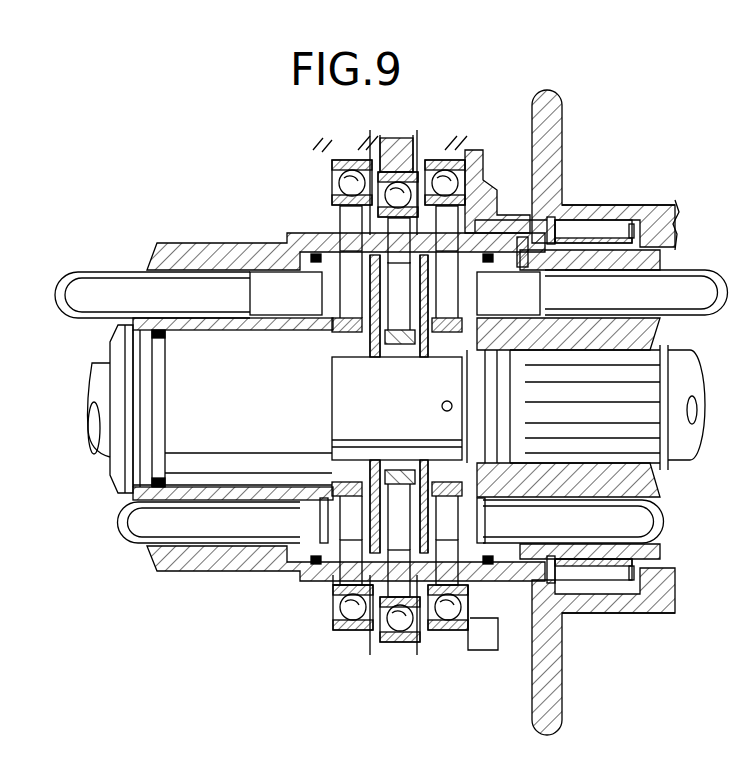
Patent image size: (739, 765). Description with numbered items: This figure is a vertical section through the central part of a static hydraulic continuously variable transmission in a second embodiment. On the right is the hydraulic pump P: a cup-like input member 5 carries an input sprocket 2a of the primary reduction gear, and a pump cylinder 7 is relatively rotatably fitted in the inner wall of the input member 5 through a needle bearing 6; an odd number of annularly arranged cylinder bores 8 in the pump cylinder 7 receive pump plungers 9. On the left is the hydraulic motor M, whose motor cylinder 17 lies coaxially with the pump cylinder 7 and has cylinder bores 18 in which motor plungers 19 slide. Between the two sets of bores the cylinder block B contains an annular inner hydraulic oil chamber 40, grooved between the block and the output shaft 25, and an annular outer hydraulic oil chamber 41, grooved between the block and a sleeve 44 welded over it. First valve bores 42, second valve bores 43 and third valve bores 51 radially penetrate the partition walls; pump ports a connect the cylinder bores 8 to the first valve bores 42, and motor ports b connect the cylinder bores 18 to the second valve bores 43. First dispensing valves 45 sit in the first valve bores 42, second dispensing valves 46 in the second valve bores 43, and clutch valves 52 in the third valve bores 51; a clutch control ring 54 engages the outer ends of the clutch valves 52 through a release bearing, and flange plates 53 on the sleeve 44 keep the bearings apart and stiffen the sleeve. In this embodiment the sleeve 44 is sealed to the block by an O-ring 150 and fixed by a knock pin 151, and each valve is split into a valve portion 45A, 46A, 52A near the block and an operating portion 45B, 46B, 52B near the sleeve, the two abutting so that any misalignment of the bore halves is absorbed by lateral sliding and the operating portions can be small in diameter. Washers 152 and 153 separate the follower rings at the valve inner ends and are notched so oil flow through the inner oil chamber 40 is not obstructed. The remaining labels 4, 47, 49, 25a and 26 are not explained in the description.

The hydraulic motor M is at (190, 198).
The cylinder block B is at (185, 248).
The hydraulic pump P is at (684, 208).
The motor cylinder 17 is at (218, 262).
The motor plungers 19 is at (177, 407).
The cylinder bores 18 is at (286, 293).
The motor ports b is at (332, 290).
The pump ports a is at (468, 290).
The cylinder bores 8 is at (508, 293).
The pump plungers 9 is at (605, 406).
The input sprocket 2a is at (548, 104).
The input member 5 is at (626, 212).
The pump cylinder 7 is at (610, 266).
The needle bearing 6 is at (608, 583).
The knock pin 151 is at (530, 262).
The second dispensing valves 46 is at (248, 208).
The valve portion 46A is at (350, 253).
The operating portion 46B is at (340, 212).
The shaft 4 is at (350, 142).
The first dispensing valves 45 is at (430, 105).
The valve portion 45A is at (480, 188).
The operating portion 45B is at (452, 190).
The sleeve 44 is at (500, 230).
The third valve bores 51 is at (360, 632).
The clutch control ring 54 is at (415, 385).
The flange plates 53 is at (383, 640).
The plate 47 is at (452, 392).
The inner hydraulic oil chamber 40 is at (359, 350).
The washer 153 is at (390, 335).
The washer 152 is at (416, 335).
The plate 49 is at (373, 390).
The outer hydraulic oil chamber 41 is at (343, 598).
The second valve bores 43 is at (318, 520).
The first valve bores 42 is at (472, 535).
The O-ring 150 is at (316, 566).
The clutch valves 52 is at (262, 365).
The valve portion 52A is at (330, 360).
The operating portion 52B is at (330, 312).
The flange 25a is at (115, 352).
The output shaft 25 is at (92, 390).
The splined shaft 26 is at (665, 355).